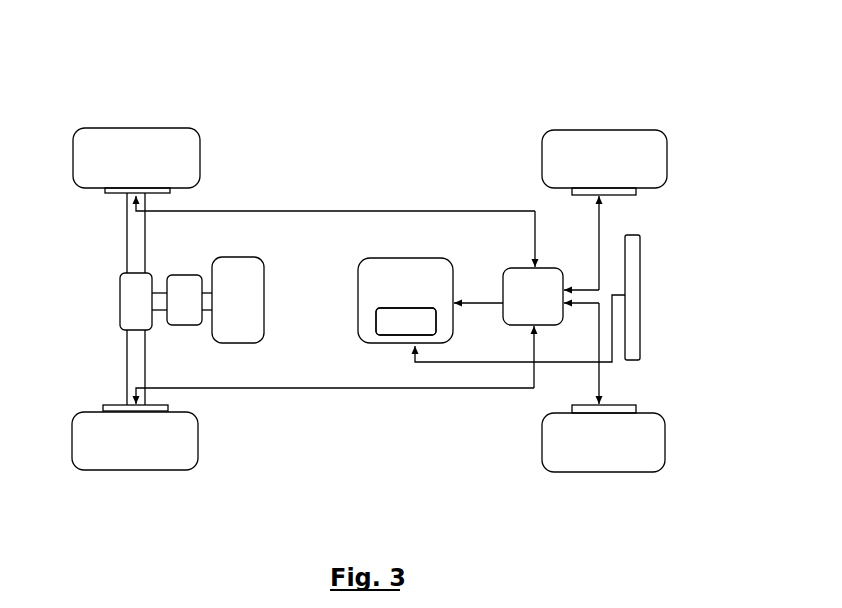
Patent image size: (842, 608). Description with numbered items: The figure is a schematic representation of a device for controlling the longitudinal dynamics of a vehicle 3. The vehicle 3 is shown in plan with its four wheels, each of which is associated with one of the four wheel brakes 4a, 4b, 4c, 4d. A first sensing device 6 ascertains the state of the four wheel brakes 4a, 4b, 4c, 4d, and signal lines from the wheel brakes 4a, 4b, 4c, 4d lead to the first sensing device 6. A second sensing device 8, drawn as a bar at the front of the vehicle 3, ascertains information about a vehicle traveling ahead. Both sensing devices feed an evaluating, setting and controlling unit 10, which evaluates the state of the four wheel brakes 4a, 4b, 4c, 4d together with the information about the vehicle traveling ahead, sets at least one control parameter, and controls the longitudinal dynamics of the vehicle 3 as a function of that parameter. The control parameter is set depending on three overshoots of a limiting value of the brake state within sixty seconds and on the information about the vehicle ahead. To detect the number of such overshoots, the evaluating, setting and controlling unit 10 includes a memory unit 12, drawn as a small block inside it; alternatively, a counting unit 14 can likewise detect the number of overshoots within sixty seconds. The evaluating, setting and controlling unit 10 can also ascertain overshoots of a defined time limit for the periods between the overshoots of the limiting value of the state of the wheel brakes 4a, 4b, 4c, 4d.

The vehicle 3 is at (519, 70).
The wheel brake 4a is at (105, 193).
The wheel brake 4b is at (103, 405).
The wheel brake 4c is at (633, 405).
The wheel brake 4d is at (622, 197).
The first sensing device 6 is at (517, 268).
The second sensing device 8 is at (640, 310).
The evaluating, setting and controlling unit 10 is at (425, 258).
The memory unit 12 is at (403, 335).
The counting unit 14 is at (406, 321).